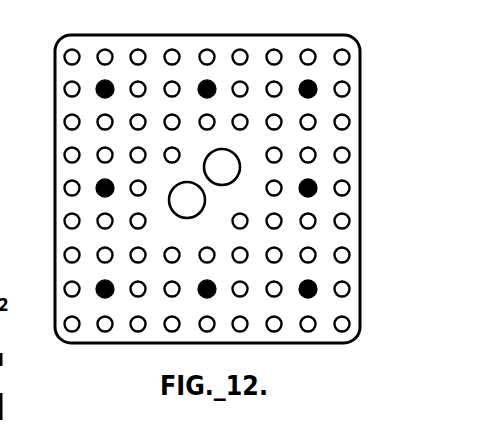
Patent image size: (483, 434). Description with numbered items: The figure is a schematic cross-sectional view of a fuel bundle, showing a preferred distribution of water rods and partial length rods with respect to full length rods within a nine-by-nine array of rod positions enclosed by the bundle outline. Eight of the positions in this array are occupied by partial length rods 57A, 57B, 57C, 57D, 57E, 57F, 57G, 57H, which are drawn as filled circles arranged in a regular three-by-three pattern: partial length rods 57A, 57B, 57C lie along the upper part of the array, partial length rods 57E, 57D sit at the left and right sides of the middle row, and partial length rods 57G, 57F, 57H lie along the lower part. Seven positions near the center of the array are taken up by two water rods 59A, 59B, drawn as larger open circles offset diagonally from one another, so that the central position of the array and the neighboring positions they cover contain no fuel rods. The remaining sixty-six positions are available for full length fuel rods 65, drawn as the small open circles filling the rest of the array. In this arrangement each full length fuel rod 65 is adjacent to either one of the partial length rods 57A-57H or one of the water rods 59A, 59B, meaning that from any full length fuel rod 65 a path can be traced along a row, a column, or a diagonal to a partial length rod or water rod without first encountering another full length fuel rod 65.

The partial length rod 57A is at (107, 80).
The partial length rod 57B is at (205, 80).
The partial length rod 57C is at (308, 80).
The partial length rod 57D is at (313, 183).
The partial length rod 57E is at (99, 184).
The partial length rod 57F is at (209, 298).
The partial length rod 57G is at (103, 297).
The partial length rod 57H is at (311, 298).
The water rod 59A is at (232, 142).
The water rod 59B is at (188, 218).
The full length fuel rod 65 is at (346, 290).